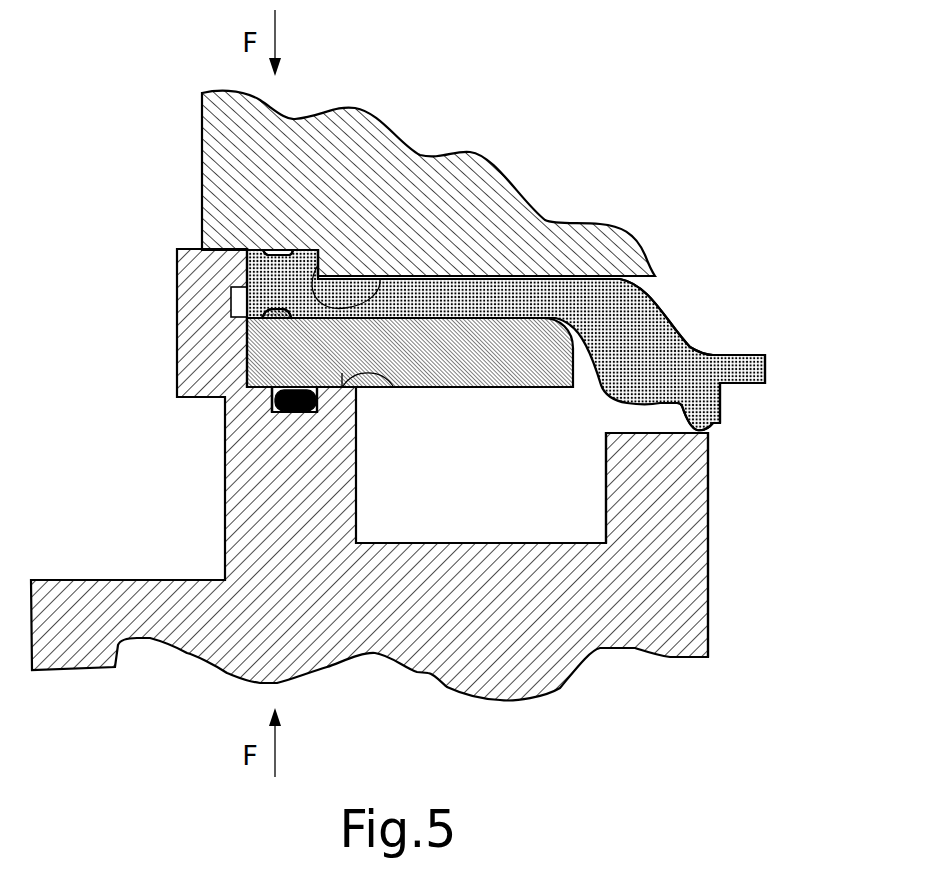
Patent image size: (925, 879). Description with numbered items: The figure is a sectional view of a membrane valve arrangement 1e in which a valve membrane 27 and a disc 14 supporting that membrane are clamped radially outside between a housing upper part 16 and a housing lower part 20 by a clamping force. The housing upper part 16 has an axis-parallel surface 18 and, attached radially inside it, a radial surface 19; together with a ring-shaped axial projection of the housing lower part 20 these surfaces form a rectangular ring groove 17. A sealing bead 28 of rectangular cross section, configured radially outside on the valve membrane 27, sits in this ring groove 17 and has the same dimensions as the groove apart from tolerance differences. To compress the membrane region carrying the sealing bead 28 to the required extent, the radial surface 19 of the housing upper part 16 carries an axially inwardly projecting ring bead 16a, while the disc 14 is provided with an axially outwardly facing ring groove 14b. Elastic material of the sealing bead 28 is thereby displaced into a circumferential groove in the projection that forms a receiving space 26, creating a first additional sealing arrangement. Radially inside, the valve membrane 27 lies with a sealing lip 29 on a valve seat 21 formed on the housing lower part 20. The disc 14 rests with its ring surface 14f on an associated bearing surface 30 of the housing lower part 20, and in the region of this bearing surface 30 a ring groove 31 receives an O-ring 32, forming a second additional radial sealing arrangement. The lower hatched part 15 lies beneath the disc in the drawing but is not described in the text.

The membrane valve arrangement 1e is at (760, 138).
The disc 14 is at (500, 370).
The ring groove 14b is at (278, 310).
The ring surface 14f is at (268, 392).
The insert ring 15 is at (573, 365).
The housing upper part 16 is at (518, 192).
The ring bead 16a is at (280, 250).
The ring groove 17 is at (319, 232).
The axis-parallel surface 18 is at (382, 277).
The radial surface 19 is at (318, 265).
The housing lower part 20 is at (225, 510).
The valve seat 21 is at (668, 437).
The receiving space 26 is at (240, 300).
The valve membrane 27 is at (690, 342).
The sealing bead 28 is at (267, 252).
The sealing lip 29 is at (714, 421).
The bearing surface 30 is at (393, 386).
The ring groove 31 is at (268, 413).
The O-ring 32 is at (320, 401).